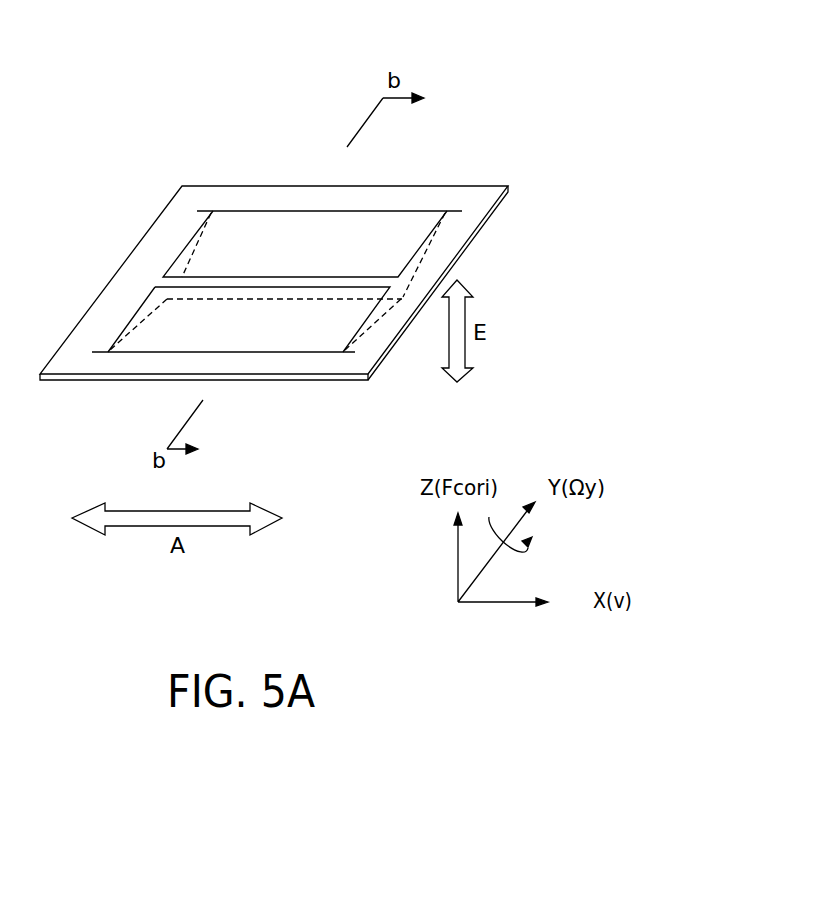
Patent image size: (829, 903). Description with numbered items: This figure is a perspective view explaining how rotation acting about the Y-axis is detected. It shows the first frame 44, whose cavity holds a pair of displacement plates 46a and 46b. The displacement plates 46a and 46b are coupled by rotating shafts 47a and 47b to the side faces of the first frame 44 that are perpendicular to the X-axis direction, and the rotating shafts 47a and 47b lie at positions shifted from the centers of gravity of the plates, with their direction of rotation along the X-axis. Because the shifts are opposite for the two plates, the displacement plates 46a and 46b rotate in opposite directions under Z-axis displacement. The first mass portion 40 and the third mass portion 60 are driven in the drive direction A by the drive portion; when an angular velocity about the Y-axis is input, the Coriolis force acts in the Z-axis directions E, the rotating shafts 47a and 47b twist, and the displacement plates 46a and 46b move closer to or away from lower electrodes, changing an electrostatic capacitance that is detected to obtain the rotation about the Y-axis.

The first mass portion 40 is at (457, 82).
The third mass portion 60 is at (284, 252).
The first frame 44 is at (492, 186).
The displacement plate 46a is at (387, 230).
The displacement plate 46b is at (173, 338).
The rotating shaft 47a is at (205, 211).
The rotating shaft 47b is at (98, 352).